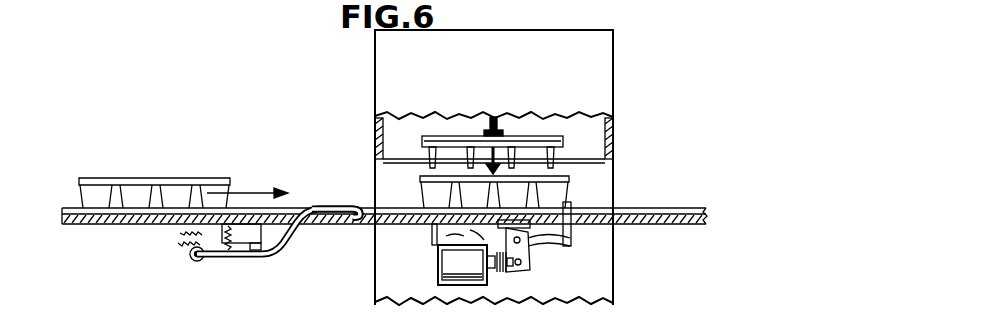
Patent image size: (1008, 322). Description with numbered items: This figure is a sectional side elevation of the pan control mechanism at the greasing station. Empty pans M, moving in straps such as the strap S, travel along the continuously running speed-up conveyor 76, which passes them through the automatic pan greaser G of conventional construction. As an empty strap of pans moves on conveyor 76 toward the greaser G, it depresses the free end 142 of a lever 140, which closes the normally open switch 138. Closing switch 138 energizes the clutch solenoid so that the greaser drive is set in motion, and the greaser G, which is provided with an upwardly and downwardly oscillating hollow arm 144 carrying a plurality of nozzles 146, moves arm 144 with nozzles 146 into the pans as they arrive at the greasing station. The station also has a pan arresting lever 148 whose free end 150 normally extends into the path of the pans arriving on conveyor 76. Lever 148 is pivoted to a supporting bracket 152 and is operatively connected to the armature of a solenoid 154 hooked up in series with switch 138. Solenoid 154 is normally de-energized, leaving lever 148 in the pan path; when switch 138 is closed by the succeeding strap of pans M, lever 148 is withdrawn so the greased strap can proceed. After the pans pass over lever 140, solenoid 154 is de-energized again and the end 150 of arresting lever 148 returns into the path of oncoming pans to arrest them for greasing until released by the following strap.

The automatic pan greaser G is at (636, 57).
The tray / carton blank stack S is at (139, 182).
The empty pans M is at (92, 201).
The speed-up conveyor 76 is at (117, 215).
The normally open switch 138 is at (222, 238).
The lever 140 is at (263, 259).
The free end of lever 142 is at (330, 205).
The oscillating hollow arm 144 is at (448, 138).
The nozzles 146 is at (554, 160).
The pan arresting lever 148 is at (541, 233).
The free end of arresting lever 150 is at (572, 210).
The supporting bracket 152 is at (500, 273).
The solenoid 154 is at (458, 252).